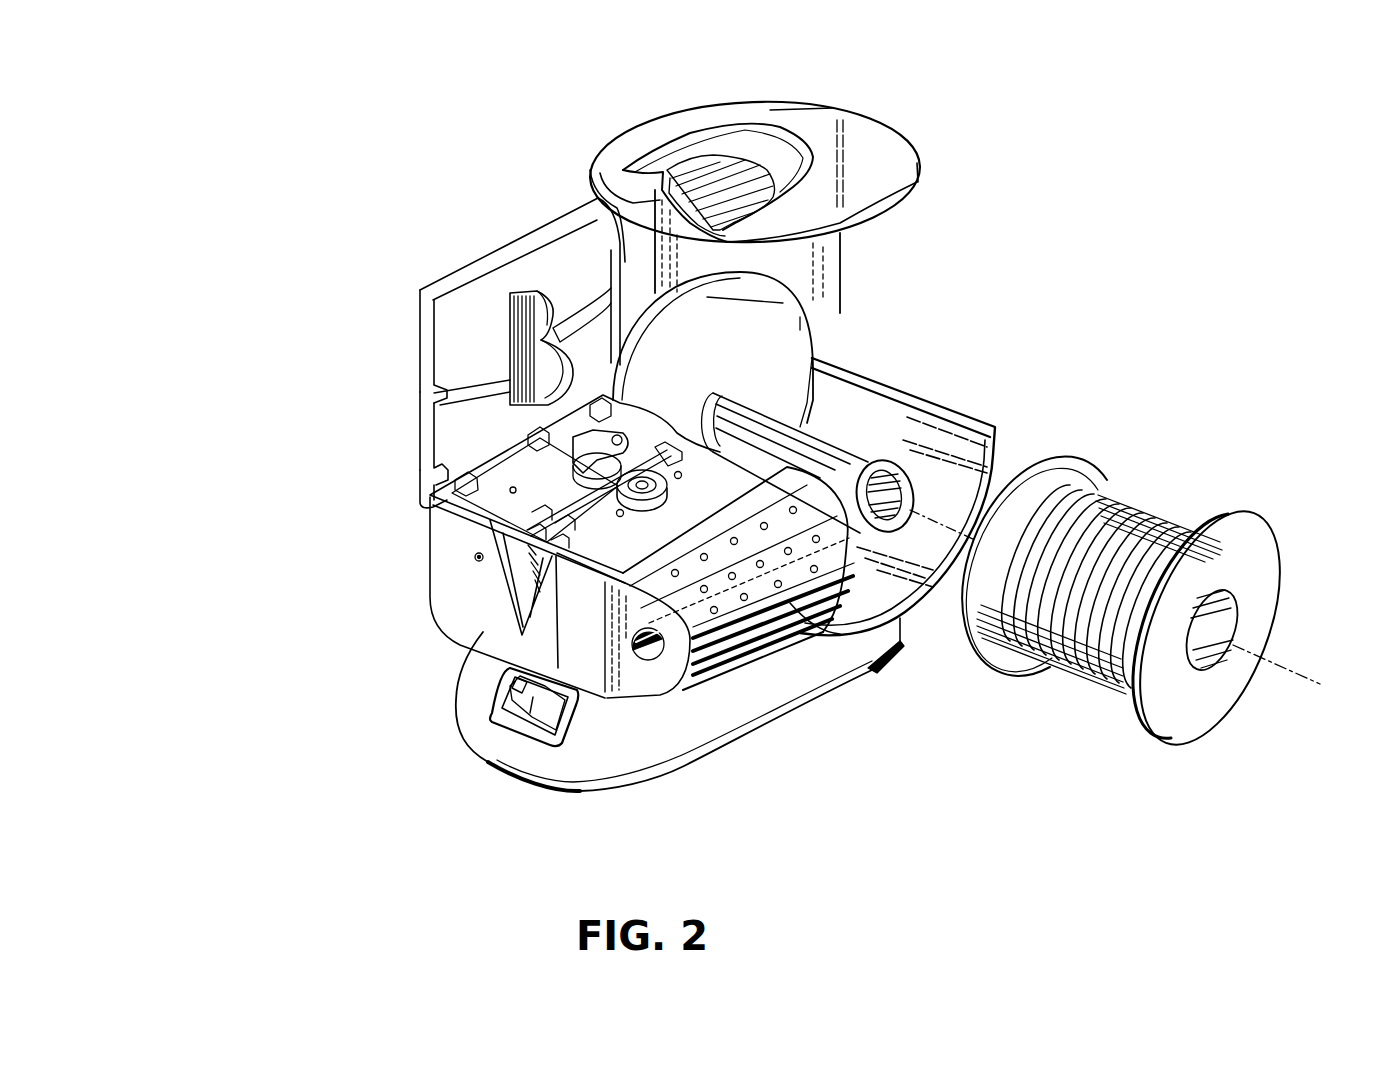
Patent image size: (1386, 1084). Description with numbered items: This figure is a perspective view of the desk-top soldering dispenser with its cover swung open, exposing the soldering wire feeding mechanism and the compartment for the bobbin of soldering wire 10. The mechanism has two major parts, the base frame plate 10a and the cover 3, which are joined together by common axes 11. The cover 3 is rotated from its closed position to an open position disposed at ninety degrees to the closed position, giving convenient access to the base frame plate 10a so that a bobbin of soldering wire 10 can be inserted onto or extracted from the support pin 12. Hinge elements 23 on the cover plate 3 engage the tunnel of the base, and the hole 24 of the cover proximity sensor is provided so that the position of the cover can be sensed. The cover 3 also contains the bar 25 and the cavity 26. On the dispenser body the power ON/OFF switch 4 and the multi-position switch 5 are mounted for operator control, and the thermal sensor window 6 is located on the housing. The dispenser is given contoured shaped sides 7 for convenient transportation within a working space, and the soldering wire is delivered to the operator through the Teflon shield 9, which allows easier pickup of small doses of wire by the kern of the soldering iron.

The dispenser cover 3 is at (578, 262).
The power ON/OFF switch 4 is at (496, 727).
The multi-position switch 5 is at (640, 692).
The thermal sensor window 6 is at (463, 560).
The contoured shaped sides 7 is at (812, 622).
The Teflon shield 9 is at (507, 577).
The bobbin of soldering wire 10 is at (1150, 506).
The base frame plate 10a is at (650, 546).
The common axes 11 is at (420, 497).
The support pin 12 is at (863, 450).
The hinge elements 23 is at (438, 462).
The hole of the cover proximity sensor 24 is at (508, 493).
The bar 25 is at (426, 384).
The cavity 26 is at (512, 310).